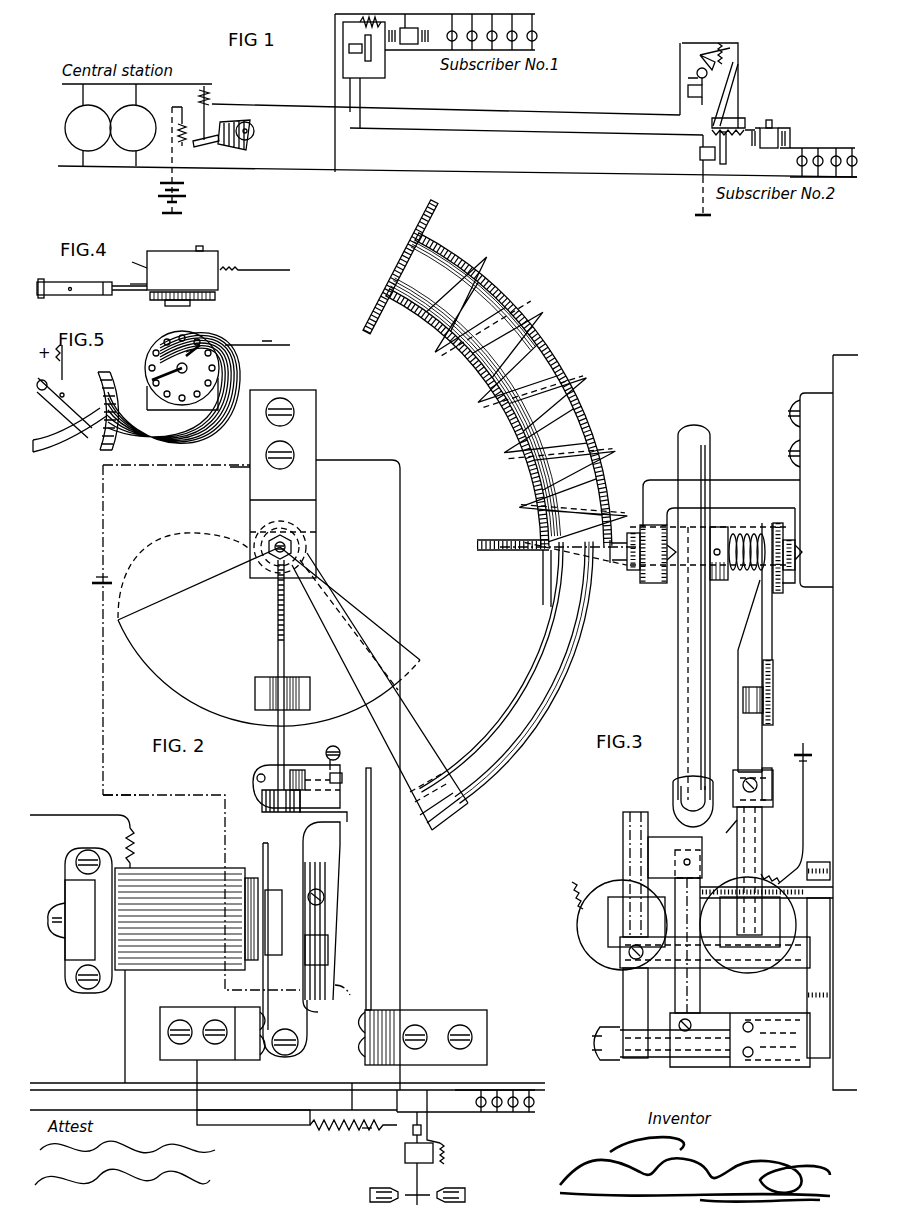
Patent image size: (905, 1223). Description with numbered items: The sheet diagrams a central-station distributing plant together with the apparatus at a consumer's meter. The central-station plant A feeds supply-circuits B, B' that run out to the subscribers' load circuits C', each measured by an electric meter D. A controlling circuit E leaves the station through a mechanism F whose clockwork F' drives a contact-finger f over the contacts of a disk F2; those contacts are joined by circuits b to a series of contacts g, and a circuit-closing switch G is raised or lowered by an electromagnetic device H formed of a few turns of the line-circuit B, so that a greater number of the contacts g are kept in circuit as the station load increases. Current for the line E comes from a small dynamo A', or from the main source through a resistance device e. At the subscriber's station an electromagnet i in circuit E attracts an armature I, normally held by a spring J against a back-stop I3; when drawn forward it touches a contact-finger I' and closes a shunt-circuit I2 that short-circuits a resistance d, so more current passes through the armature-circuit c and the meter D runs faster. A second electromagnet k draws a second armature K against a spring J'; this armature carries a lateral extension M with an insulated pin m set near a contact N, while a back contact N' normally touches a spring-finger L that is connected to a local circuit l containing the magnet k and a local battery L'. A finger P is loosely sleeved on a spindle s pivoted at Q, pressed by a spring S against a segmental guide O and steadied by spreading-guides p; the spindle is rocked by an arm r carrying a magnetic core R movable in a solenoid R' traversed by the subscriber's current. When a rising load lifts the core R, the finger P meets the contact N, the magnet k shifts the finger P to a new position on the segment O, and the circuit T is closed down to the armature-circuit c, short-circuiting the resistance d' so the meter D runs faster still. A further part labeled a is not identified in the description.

In FIG. 1, the central-station plant A is at (110, 125).
In FIG. 1, the small dynamo A' is at (180, 198).
In FIG. 1, the supply-circuit B is at (446, 79).
In FIG. 2, the supply-circuit B is at (287, 1109).
In FIG. 1, the return supply-circuit B' is at (457, 178).
In FIG. 2, the return supply-circuit B' is at (287, 1073).
In FIG. 1, the load circuits C' is at (638, 95).
In FIG. 2, the load circuits C' is at (466, 1114).
In FIG. 1, the electric meter D is at (587, 88).
In FIG. 2, the electric meter D is at (425, 1158).
In FIG. 1, the controlling circuit E is at (526, 137).
In FIG. 4, the controlling circuit E is at (256, 261).
In FIG. 5, the controlling circuit E is at (259, 345).
In FIG. 2, the controlling circuit E is at (82, 829).
In FIG. 3, the controlling circuit E is at (569, 880).
In FIG. 1, the time-switch mechanism F is at (241, 135).
In FIG. 4, the time-switch mechanism F is at (132, 259).
In FIG. 5, the time-switch mechanism F is at (192, 357).
In FIG. 4, the clockwork F' is at (182, 268).
In FIG. 5, the clockwork F' is at (205, 370).
In FIG. 4, the contact disk F2 is at (193, 299).
In FIG. 1, the circuit-closing switch G is at (206, 148).
In FIG. 4, the circuit-closing switch G is at (74, 299).
In FIG. 5, the circuit-closing switch G is at (70, 398).
In FIG. 1, the electromagnetic device H is at (212, 111).
In FIG. 1, the resistance device e is at (184, 161).
In FIG. 1, the electromagnet i is at (349, 49).
In FIG. 2, the electromagnet i is at (153, 965).
In FIG. 3, the electromagnet i is at (622, 925).
In FIG. 1, the armature I is at (551, 100).
In FIG. 2, the armature I is at (279, 922).
In FIG. 3, the armature I is at (661, 1014).
In FIG. 2, the contact-finger I' is at (271, 940).
In FIG. 3, the contact-finger I' is at (675, 925).
In FIG. 2, the shunt-circuit I2 is at (274, 1115).
In FIG. 2, the back-stop I3 is at (316, 950).
In FIG. 1, the armature-circuit c is at (364, 74).
In FIG. 2, the armature-circuit c is at (406, 1117).
In FIG. 1, the resistance a is at (375, 17).
In FIG. 1, the second electromagnet k is at (697, 94).
In FIG. 3, the second electromagnet k is at (748, 925).
In FIG. 1, the resistance d is at (728, 111).
In FIG. 2, the resistance d is at (353, 1137).
In FIG. 1, the armature-circuit resistance d' is at (733, 137).
In FIG. 2, the armature-circuit resistance d' is at (362, 1142).
In FIG. 1, the solenoid R' is at (734, 46).
In FIG. 2, the solenoid R' is at (501, 403).
In FIG. 2, the magnetic core R is at (507, 673).
In FIG. 3, the magnetic core R is at (682, 626).
In FIG. 1, the circuit conductor T is at (731, 87).
In FIG. 2, the circuit conductor T is at (411, 779).
In FIG. 4, the connecting circuits b is at (138, 277).
In FIG. 5, the connecting circuits b is at (174, 392).
In FIG. 4, the contact-finger f is at (174, 313).
In FIG. 5, the contact-finger f is at (176, 367).
In FIG. 4, the contacts g is at (125, 299).
In FIG. 5, the contacts g is at (92, 417).
In FIG. 2, the segmental guide O is at (269, 629).
In FIG. 3, the segmental guide O is at (786, 665).
In FIG. 2, the contact-finger P is at (278, 745).
In FIG. 3, the contact-finger P is at (755, 647).
In FIG. 2, the spreading-guides p is at (233, 690).
In FIG. 3, the spreading-guides p is at (753, 700).
In FIG. 2, the arm r is at (380, 691).
In FIG. 2, the lateral extension M is at (256, 768).
In FIG. 2, the insulated pin m is at (257, 780).
In FIG. 2, the contact N is at (297, 764).
In FIG. 2, the back contact N' is at (338, 766).
In FIG. 2, the second armature K is at (262, 800).
In FIG. 3, the second armature K is at (768, 830).
In FIG. 2, the spring J is at (325, 917).
In FIG. 3, the spring J is at (635, 874).
In FIG. 2, the spring J' is at (323, 806).
In FIG. 3, the spring J' is at (724, 832).
In FIG. 2, the spring-contact finger L is at (375, 889).
In FIG. 3, the spring-contact finger L is at (749, 871).
In FIG. 2, the local battery L' is at (86, 585).
In FIG. 3, the local battery L' is at (809, 745).
In FIG. 2, the local circuit l is at (228, 882).
In FIG. 3, the local circuit l is at (804, 782).
In FIG. 3, the pivot Q is at (715, 553).
In FIG. 3, the spring S is at (747, 543).
In FIG. 3, the spindle s is at (757, 578).